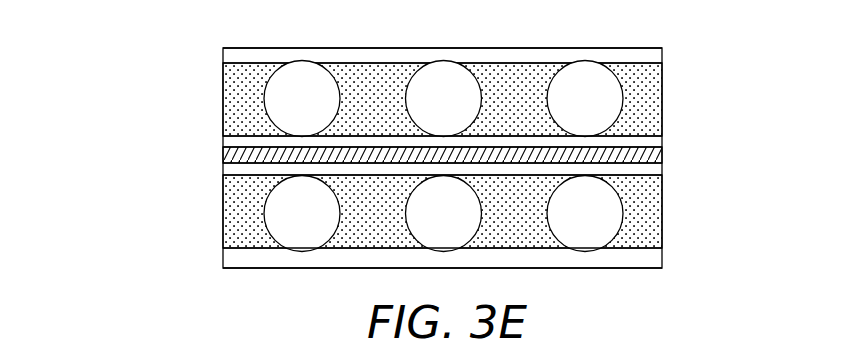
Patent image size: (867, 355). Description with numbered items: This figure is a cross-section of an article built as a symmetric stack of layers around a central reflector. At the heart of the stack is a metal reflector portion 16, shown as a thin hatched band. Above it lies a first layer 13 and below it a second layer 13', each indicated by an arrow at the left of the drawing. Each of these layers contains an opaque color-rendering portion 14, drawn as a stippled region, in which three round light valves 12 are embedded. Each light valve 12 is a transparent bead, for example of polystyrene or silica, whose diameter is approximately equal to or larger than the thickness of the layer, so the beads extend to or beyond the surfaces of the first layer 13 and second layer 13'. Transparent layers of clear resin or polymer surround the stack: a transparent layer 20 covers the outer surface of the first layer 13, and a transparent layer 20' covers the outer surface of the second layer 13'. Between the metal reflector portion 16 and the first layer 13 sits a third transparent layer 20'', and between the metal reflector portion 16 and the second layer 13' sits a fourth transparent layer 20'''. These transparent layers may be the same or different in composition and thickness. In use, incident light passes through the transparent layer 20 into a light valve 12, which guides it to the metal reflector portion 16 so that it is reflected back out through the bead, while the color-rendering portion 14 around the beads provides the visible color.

The first layer 13 is at (382, 103).
The second layer 13' is at (379, 213).
The transparent layer 20 is at (449, 39).
The color-rendering portion 14 is at (648, 72).
The light valve 12 is at (622, 108).
The third transparent layer 20'' is at (500, 130).
The metal reflector portion 16 is at (638, 156).
The fourth transparent layer 20''' is at (486, 181).
The transparent layer 20' is at (482, 265).